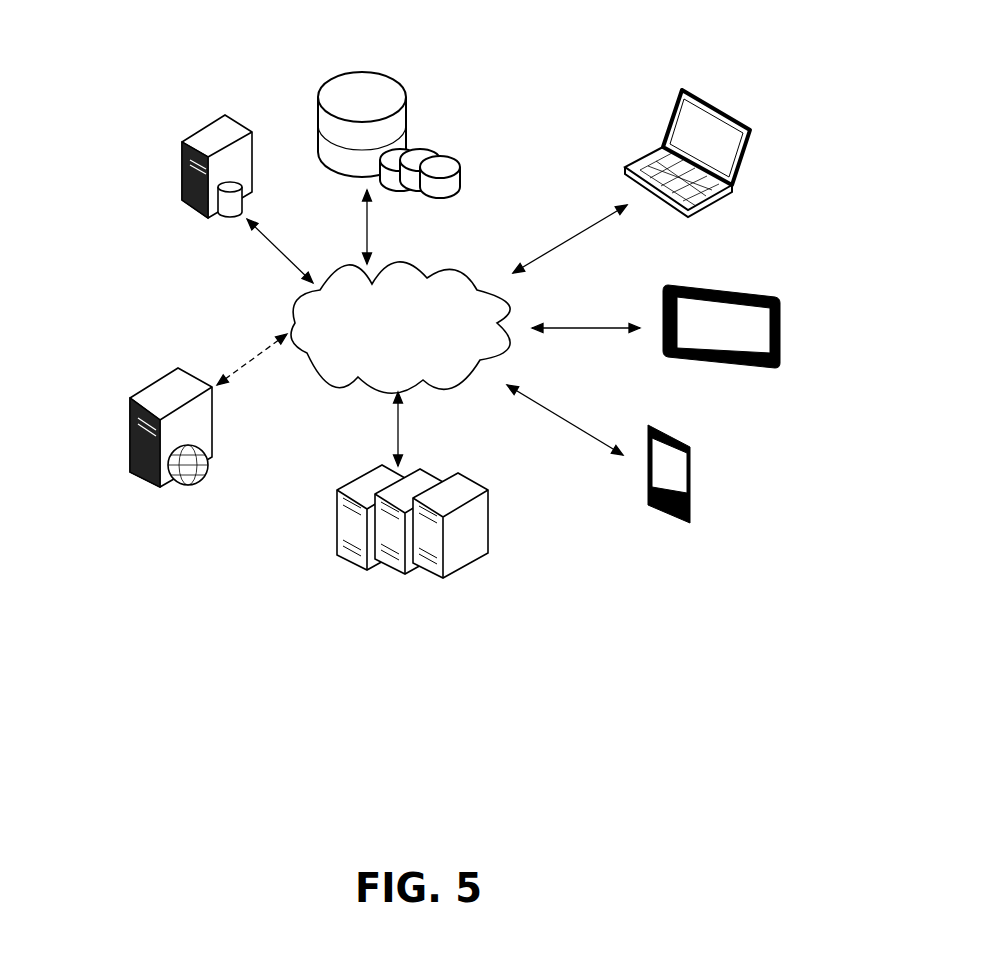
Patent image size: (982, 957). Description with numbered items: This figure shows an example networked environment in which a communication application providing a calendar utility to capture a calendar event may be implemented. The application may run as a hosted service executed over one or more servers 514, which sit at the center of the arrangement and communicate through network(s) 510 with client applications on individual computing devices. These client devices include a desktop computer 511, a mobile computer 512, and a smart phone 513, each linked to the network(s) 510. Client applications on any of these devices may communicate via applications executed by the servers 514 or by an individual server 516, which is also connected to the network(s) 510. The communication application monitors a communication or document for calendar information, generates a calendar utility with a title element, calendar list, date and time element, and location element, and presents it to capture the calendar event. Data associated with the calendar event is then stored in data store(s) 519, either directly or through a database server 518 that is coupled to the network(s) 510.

The network(s) 510 is at (403, 254).
The desktop computer 511 is at (721, 92).
The mobile computer 512 is at (756, 267).
The smart phone 513 is at (699, 441).
The servers 514 is at (364, 467).
The individual server 516 is at (149, 373).
The database server 518 is at (217, 227).
The data store(s) 519 is at (378, 68).